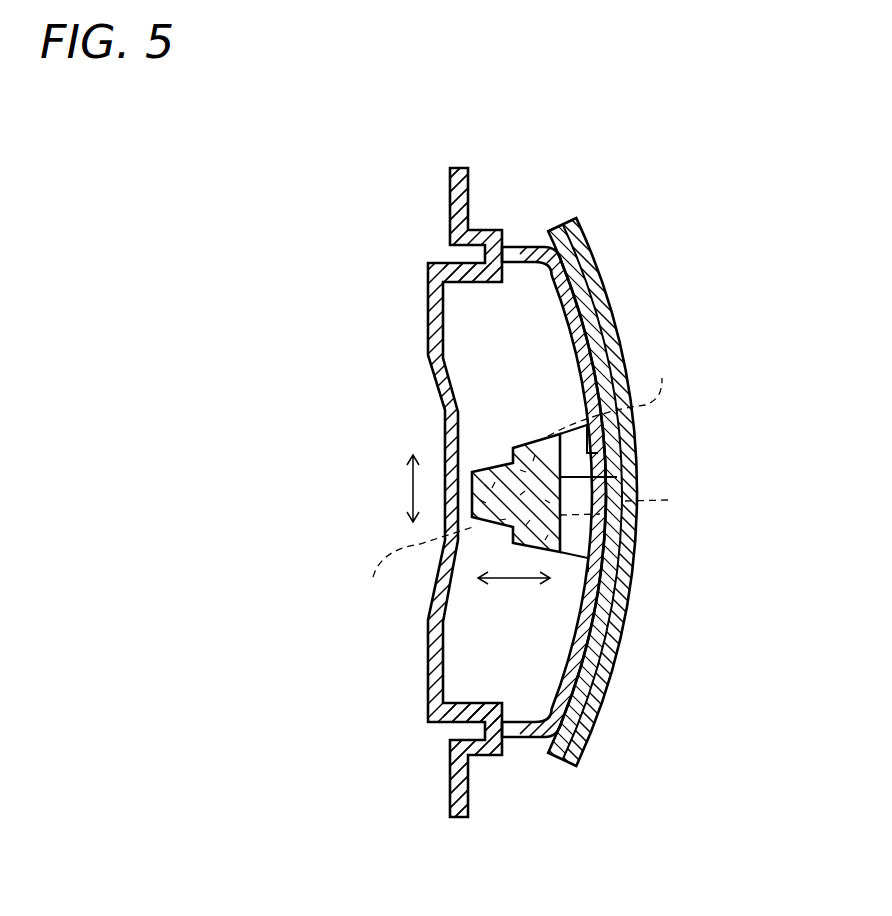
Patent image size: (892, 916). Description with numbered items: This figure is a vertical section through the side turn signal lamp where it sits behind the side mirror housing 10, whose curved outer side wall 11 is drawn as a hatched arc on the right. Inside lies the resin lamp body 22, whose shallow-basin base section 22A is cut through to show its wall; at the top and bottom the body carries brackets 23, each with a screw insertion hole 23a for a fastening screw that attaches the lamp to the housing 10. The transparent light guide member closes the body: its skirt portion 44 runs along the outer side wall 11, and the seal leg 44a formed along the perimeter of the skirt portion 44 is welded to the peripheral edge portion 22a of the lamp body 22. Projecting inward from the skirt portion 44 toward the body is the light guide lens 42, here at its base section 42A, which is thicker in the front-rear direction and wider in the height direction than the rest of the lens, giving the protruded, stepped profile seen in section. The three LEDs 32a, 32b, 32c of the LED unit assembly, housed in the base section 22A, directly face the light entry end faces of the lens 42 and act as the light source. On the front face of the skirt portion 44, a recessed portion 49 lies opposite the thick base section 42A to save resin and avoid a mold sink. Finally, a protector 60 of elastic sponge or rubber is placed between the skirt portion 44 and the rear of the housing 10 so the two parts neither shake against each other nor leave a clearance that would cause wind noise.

The side mirror housing 10 is at (653, 504).
The curved outer side wall 11 is at (627, 606).
The lamp body 22 is at (511, 497).
The base section 22A is at (427, 668).
The peripheral edge portion 22a is at (480, 756).
The bracket 23 is at (459, 167).
The screw insertion hole 23a is at (451, 184).
The LED 32a is at (620, 390).
The LED 32b is at (642, 501).
The LED 32c is at (409, 570).
The light guide lens 42 is at (450, 519).
The base section 42A is at (487, 463).
The skirt portion 44 is at (606, 694).
The seal leg 44a is at (513, 247).
The recessed portion 49 is at (600, 476).
The protector 60 is at (603, 440).